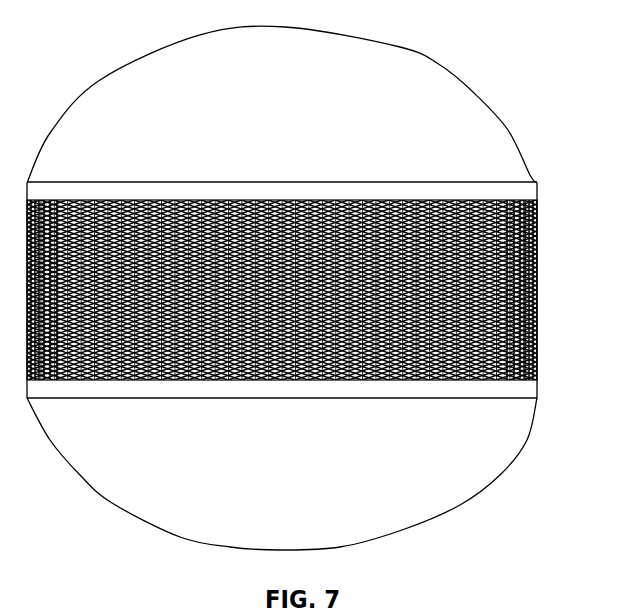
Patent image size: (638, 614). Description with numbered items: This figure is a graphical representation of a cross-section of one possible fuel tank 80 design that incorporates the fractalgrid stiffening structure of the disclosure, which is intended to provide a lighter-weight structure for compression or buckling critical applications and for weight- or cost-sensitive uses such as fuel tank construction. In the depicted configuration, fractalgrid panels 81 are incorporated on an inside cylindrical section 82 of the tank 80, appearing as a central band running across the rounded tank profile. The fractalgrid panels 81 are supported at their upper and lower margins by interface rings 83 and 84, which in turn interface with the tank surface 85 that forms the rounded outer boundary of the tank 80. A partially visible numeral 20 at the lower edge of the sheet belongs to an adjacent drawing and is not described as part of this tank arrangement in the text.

The fuel tank 80 is at (524, 53).
The fractalgrid panels 81 is at (518, 272).
The inside cylindrical section 82 is at (537, 313).
The interface ring 83 is at (507, 190).
The interface ring 84 is at (488, 387).
The tank surface 85 is at (112, 503).
The adjacent figure element 20 is at (430, 613).